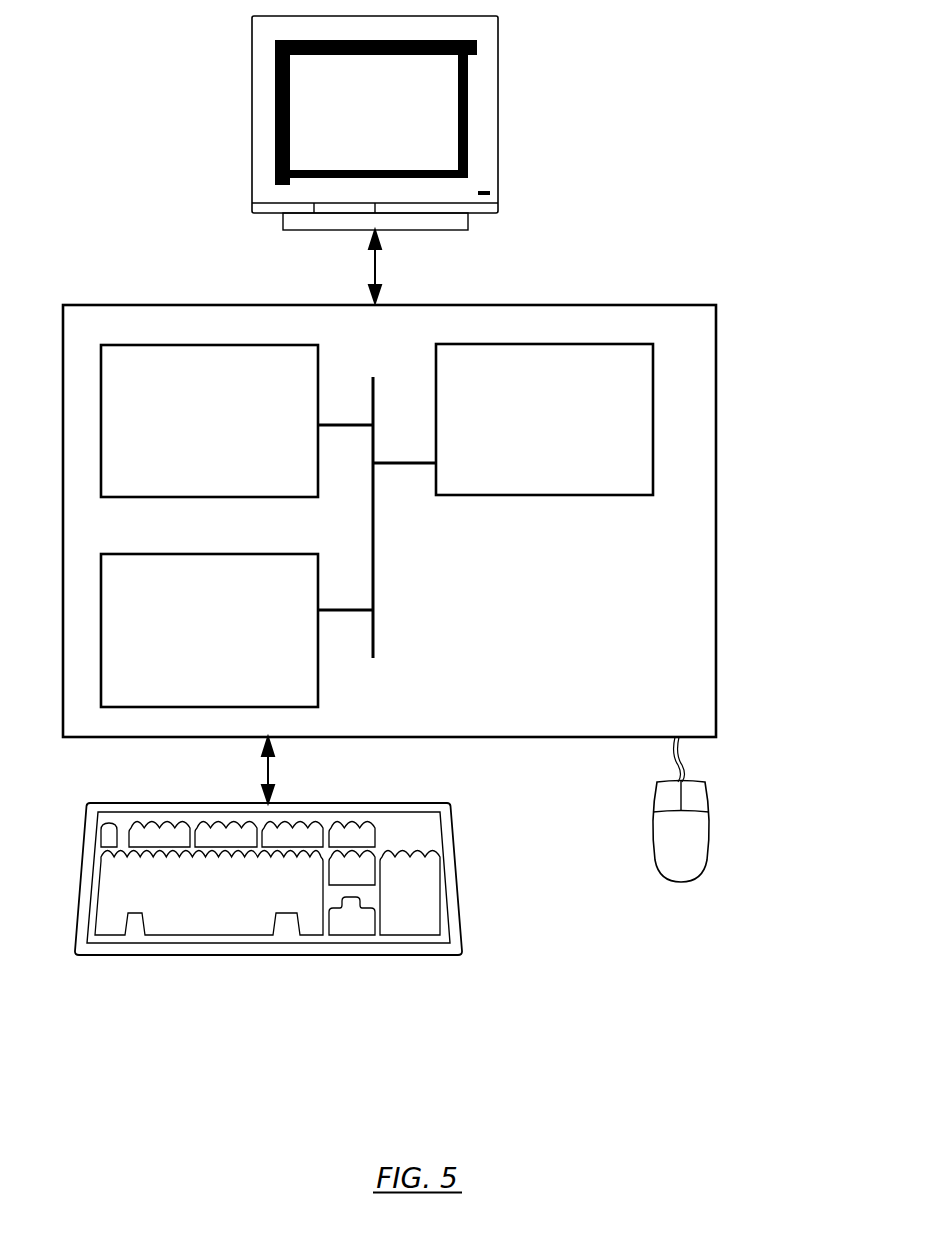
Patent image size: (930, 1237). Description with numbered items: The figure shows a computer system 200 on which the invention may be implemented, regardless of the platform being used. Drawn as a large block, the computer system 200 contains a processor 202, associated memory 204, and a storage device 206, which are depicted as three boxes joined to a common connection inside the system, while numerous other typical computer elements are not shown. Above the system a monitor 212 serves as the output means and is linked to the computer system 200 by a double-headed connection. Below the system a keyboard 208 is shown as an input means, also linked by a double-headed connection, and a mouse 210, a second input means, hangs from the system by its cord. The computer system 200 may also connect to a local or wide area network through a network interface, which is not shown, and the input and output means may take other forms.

The computer system 200 is at (728, 168).
The processor 202 is at (539, 430).
The memory 204 is at (188, 432).
The storage device 206 is at (187, 642).
The keyboard 208 is at (182, 916).
The mouse 210 is at (660, 852).
The monitor 212 is at (354, 128).